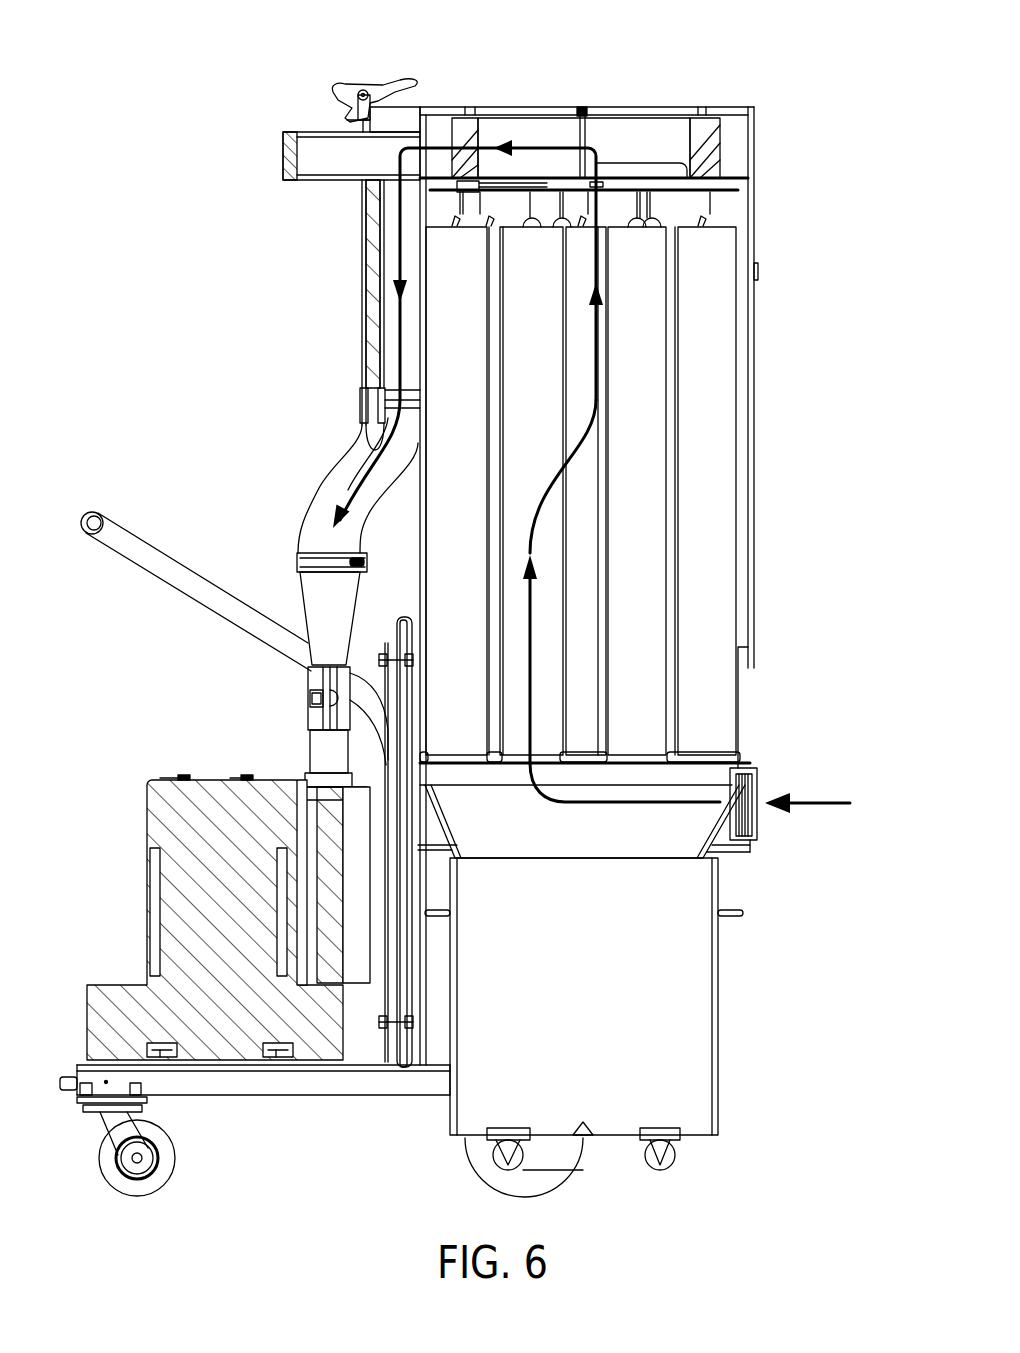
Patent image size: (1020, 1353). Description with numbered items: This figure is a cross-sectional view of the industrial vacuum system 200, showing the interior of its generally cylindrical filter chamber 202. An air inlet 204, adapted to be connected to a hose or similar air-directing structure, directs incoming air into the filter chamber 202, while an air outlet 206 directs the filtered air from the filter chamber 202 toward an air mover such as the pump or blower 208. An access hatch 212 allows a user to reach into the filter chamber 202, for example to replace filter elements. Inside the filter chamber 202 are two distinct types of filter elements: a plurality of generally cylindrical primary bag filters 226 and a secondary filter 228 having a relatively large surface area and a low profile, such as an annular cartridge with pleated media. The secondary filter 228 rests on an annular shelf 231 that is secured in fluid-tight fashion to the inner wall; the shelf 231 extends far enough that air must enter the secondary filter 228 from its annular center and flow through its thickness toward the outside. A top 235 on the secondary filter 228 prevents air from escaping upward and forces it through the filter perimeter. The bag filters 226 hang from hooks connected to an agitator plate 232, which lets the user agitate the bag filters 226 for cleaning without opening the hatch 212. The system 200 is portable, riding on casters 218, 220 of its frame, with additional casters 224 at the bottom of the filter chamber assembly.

The industrial vacuum system 200 is at (313, 65).
The filter chamber 202 is at (753, 186).
The air inlet 204 is at (757, 780).
The air outlet 206 is at (390, 257).
The blower 208 is at (163, 800).
The access hatch 212 is at (757, 472).
The caster 218 is at (490, 1170).
The caster 220 is at (165, 1161).
The caster 224 is at (662, 1165).
The primary bag filter 226 is at (577, 240).
The secondary filter 228 is at (707, 130).
The annular shelf 231 is at (458, 186).
The agitator plate 232 is at (435, 186).
The top 235 is at (663, 113).